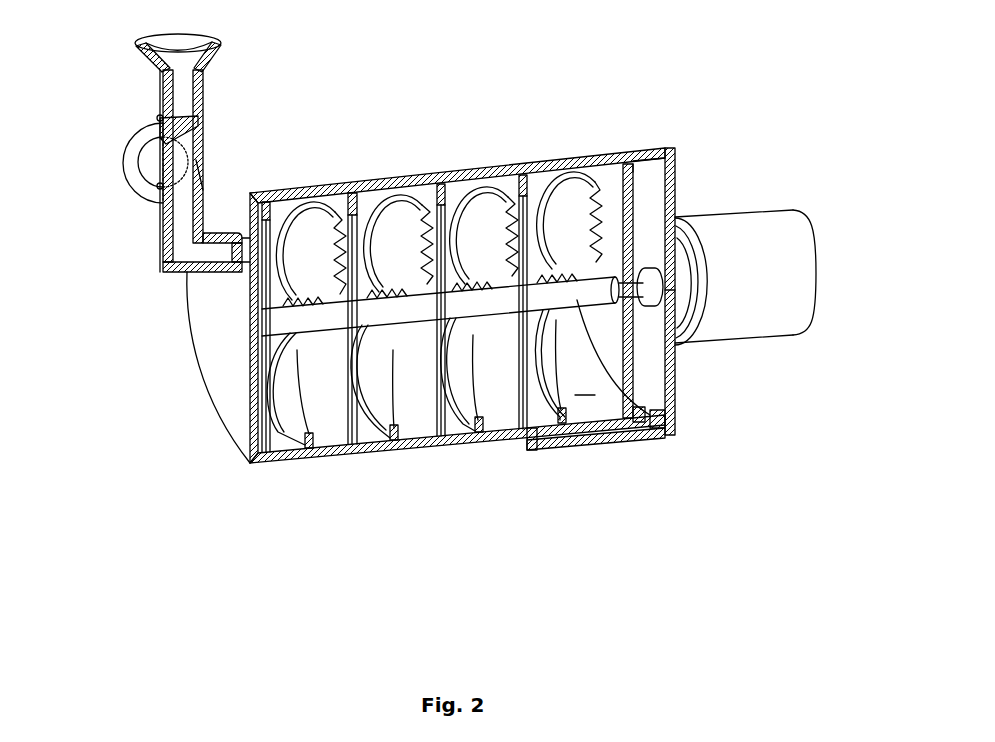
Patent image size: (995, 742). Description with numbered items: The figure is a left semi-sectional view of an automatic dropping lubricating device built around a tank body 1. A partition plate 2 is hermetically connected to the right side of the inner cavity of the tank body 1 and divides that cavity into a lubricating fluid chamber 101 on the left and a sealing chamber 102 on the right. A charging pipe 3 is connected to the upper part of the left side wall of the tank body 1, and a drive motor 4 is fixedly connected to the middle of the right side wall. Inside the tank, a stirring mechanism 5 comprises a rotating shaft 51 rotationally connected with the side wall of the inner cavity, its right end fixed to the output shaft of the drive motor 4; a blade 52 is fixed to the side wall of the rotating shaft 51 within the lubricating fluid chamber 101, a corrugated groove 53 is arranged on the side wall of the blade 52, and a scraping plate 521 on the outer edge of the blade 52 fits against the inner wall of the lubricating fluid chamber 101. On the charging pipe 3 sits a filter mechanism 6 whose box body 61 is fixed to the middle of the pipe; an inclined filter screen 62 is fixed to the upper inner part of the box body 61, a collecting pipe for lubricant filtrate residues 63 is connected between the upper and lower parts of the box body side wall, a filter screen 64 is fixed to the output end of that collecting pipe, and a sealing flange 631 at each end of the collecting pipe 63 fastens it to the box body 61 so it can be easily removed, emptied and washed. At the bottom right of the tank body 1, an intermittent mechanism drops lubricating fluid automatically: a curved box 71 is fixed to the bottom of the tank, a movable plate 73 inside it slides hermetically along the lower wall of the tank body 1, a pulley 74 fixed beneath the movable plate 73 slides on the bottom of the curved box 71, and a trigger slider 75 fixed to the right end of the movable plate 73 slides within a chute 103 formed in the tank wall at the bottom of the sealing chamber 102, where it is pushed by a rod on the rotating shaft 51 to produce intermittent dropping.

The tank body 1 is at (440, 178).
The partition plate 2 is at (640, 243).
The charging pipe 3 is at (214, 63).
The drive motor 4 is at (778, 236).
The stirring mechanism 5 is at (257, 507).
The filter mechanism 6 is at (63, 78).
The rotating shaft 51 is at (427, 313).
The blade 52 is at (282, 340).
The corrugated groove 53 is at (347, 290).
The scraping plate 521 is at (468, 385).
The box body 61 is at (156, 152).
The inclined filter screen 62 is at (158, 116).
The collecting pipe for lubricant filtrate residues 63 is at (140, 165).
The sealing flange 631 is at (206, 186).
The filter screen 64 is at (232, 250).
The curved box 71 is at (630, 450).
The movable plate 73 is at (588, 452).
The pulley 74 is at (548, 452).
The trigger slider 75 is at (655, 437).
The lubricating fluid chamber 101 is at (585, 410).
The sealing chamber 102 is at (650, 200).
The chute 103 is at (672, 400).